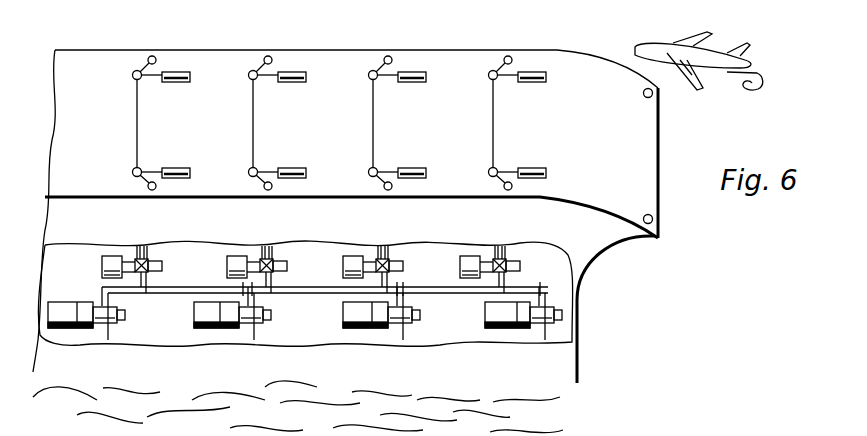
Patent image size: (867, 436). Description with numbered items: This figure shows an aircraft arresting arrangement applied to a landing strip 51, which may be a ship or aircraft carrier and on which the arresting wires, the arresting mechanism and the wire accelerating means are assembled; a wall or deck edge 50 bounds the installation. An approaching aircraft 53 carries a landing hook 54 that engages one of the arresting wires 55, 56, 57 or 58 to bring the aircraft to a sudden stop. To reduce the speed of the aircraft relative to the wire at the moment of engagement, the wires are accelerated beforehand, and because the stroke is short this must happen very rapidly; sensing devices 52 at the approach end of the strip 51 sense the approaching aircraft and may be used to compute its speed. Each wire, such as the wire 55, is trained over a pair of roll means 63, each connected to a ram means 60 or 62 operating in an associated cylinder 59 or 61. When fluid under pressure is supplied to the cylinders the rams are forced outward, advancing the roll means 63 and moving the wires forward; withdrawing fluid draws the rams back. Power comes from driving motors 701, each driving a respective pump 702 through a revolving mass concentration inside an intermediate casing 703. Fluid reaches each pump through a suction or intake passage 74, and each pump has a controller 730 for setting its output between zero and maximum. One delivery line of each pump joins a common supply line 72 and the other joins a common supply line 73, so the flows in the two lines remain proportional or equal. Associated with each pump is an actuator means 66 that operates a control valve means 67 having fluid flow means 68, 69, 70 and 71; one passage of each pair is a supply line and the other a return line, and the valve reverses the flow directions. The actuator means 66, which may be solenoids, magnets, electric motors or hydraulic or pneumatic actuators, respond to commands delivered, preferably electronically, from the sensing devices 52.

The wall 50 is at (587, 232).
The landing strip 51 is at (89, 62).
The sensing device 52 is at (653, 95).
The aircraft 53 is at (654, 46).
The landing hook 54 is at (760, 89).
The arresting wire 55 is at (495, 114).
The arresting wire 56 is at (375, 114).
The arresting wire 57 is at (255, 114).
The arresting wire 58 is at (139, 114).
The cylinder 59 is at (189, 71).
The ram means 60 is at (169, 72).
The cylinder 61 is at (186, 167).
The ram means 62 is at (169, 168).
The roll means 63 is at (132, 76).
The actuator means 66 is at (108, 266).
The control valve means 67 is at (160, 267).
The fluid flow means 68 is at (136, 248).
The fluid flow means 69 is at (140, 246).
The fluid flow means 70 is at (144, 246).
The fluid flow means 71 is at (149, 250).
The common supply line 72 is at (160, 290).
The common supply line 73 is at (176, 296).
The suction passage 74 is at (109, 335).
The driving motor 701 is at (62, 312).
The pump 702 is at (100, 325).
The intermediate casing 703 is at (81, 312).
The controller 730 is at (126, 320).